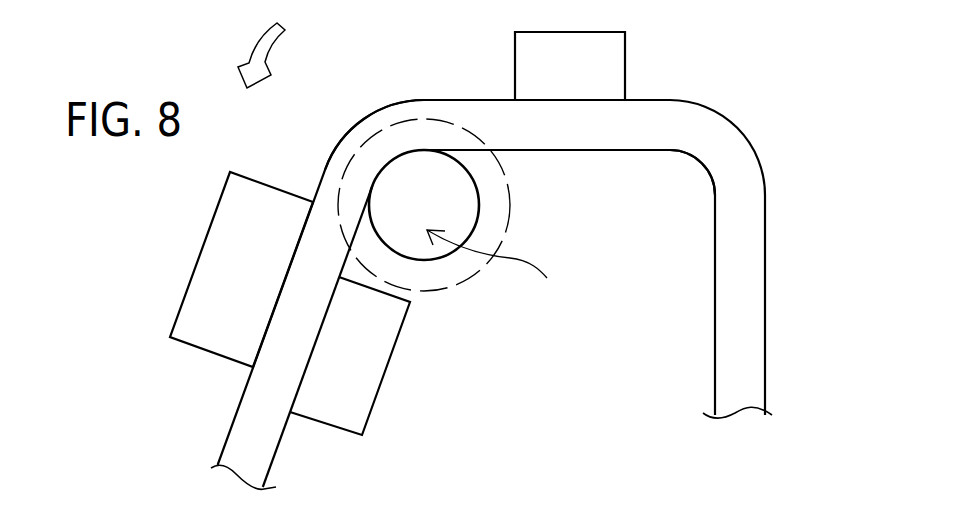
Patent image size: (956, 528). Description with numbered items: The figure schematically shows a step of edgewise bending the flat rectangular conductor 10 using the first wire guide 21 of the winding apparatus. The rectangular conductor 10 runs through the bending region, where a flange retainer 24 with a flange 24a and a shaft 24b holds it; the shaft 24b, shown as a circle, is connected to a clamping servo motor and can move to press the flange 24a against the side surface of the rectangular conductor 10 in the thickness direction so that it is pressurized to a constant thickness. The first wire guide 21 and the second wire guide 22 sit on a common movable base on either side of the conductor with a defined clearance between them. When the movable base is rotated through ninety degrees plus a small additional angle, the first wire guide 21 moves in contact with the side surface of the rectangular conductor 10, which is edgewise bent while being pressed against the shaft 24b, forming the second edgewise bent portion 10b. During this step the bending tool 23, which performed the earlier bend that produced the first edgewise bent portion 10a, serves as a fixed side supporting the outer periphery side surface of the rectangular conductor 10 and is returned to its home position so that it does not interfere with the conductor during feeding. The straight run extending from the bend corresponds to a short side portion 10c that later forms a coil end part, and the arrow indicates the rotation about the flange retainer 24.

The rectangular conductor 10 is at (750, 332).
The first edgewise bent portion 10a is at (717, 137).
The second edgewise bent portion 10b is at (363, 123).
The short side portion 10c is at (588, 127).
The first wire guide 21 is at (220, 289).
The second wire guide 22 is at (372, 363).
The bending tool 23 is at (612, 62).
The flange retainer 24 is at (503, 262).
The flange 24a is at (507, 228).
The shaft 24b is at (480, 192).